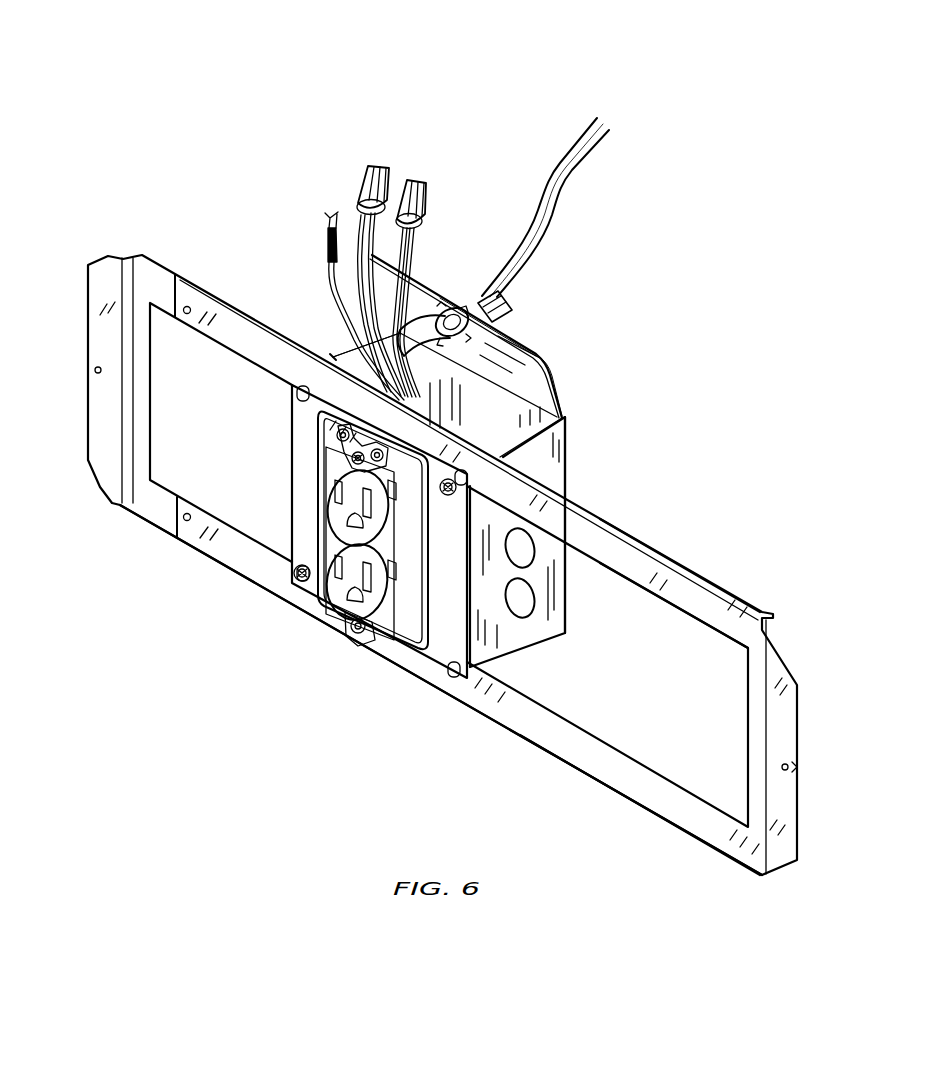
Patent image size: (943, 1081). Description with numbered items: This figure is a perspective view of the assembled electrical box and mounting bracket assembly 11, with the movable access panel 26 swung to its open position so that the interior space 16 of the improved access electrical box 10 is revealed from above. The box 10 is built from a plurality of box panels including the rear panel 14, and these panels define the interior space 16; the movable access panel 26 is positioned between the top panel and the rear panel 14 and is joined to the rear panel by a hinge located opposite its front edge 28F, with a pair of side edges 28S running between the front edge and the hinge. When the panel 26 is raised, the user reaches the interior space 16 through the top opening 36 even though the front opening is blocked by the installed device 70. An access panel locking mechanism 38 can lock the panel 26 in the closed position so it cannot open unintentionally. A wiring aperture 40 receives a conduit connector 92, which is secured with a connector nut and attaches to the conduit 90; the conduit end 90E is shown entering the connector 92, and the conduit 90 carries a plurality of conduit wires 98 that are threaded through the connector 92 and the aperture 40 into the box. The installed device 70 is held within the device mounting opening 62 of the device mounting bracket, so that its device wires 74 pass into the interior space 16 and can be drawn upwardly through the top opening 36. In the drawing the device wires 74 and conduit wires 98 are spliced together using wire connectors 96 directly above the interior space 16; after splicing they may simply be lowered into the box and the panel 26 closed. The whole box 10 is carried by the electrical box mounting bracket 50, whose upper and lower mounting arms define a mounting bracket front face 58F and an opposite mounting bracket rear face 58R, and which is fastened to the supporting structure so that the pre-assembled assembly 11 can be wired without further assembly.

The improved access electrical box 10 is at (590, 431).
The electrical box and mounting bracket assembly 11 is at (579, 848).
The rear panel 14 is at (445, 379).
The interior space 16 is at (565, 414).
The movable access panel 26 is at (558, 395).
The front edge 28F is at (513, 340).
The side edges 28S is at (550, 375).
The top opening 36 is at (347, 347).
The access panel locking mechanism 38 is at (333, 355).
The wiring aperture 40 is at (442, 310).
The electrical box mounting bracket 50 is at (113, 240).
The mounting bracket front face 58F is at (685, 592).
The mounting bracket rear face 58R is at (622, 580).
The device mounting opening 62 is at (398, 618).
The installed device 70 is at (335, 608).
The device wires 74 is at (358, 220).
The conduit 90 is at (556, 229).
The cable end 90E is at (407, 330).
The conduit connector 92 is at (490, 315).
The wire connectors 96 is at (380, 165).
The conduit wires 98 is at (400, 223).